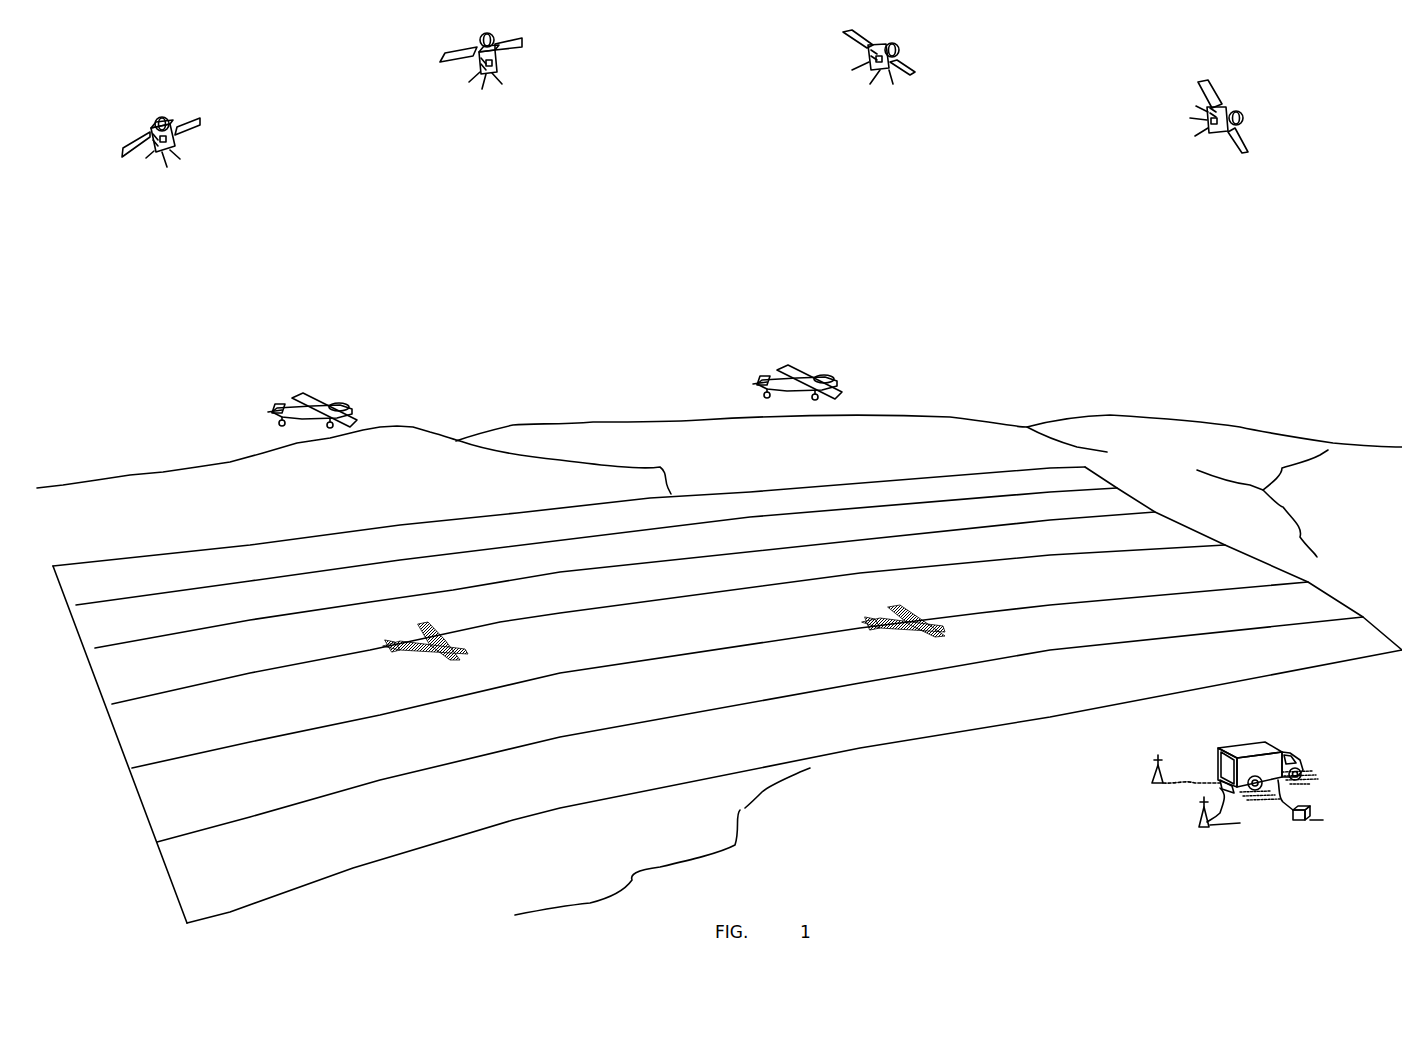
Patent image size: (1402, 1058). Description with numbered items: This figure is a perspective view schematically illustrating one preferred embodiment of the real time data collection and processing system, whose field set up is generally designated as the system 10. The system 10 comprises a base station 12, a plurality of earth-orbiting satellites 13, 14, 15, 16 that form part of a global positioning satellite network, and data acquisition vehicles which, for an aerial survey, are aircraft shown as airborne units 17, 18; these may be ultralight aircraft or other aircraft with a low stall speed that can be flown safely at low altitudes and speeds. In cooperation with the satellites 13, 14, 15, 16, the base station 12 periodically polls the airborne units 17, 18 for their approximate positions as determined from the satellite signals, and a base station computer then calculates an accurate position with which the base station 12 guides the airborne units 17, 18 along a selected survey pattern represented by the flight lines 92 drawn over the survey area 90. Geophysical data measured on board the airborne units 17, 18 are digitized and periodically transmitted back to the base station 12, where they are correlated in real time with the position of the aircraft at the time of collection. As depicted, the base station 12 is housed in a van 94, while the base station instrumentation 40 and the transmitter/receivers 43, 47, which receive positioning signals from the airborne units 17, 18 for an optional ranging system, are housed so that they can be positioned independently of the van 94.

The real time aerial survey system 10 is at (952, 452).
The base station 12 is at (1270, 720).
The earth-orbiting satellite 13 is at (218, 135).
The earth-orbiting satellite 14 is at (537, 60).
The earth-orbiting satellite 15 is at (933, 53).
The earth-orbiting satellite 16 is at (1270, 114).
The airborne unit 17 is at (328, 403).
The airborne unit 18 is at (808, 378).
The base station instrumentation 40 is at (1300, 806).
The transmitter/receiver 43 is at (1200, 818).
The transmitter/receiver 47 is at (1153, 774).
The survey area 90 is at (515, 513).
The flight lines 92 is at (76, 605).
The van 94 is at (1287, 752).